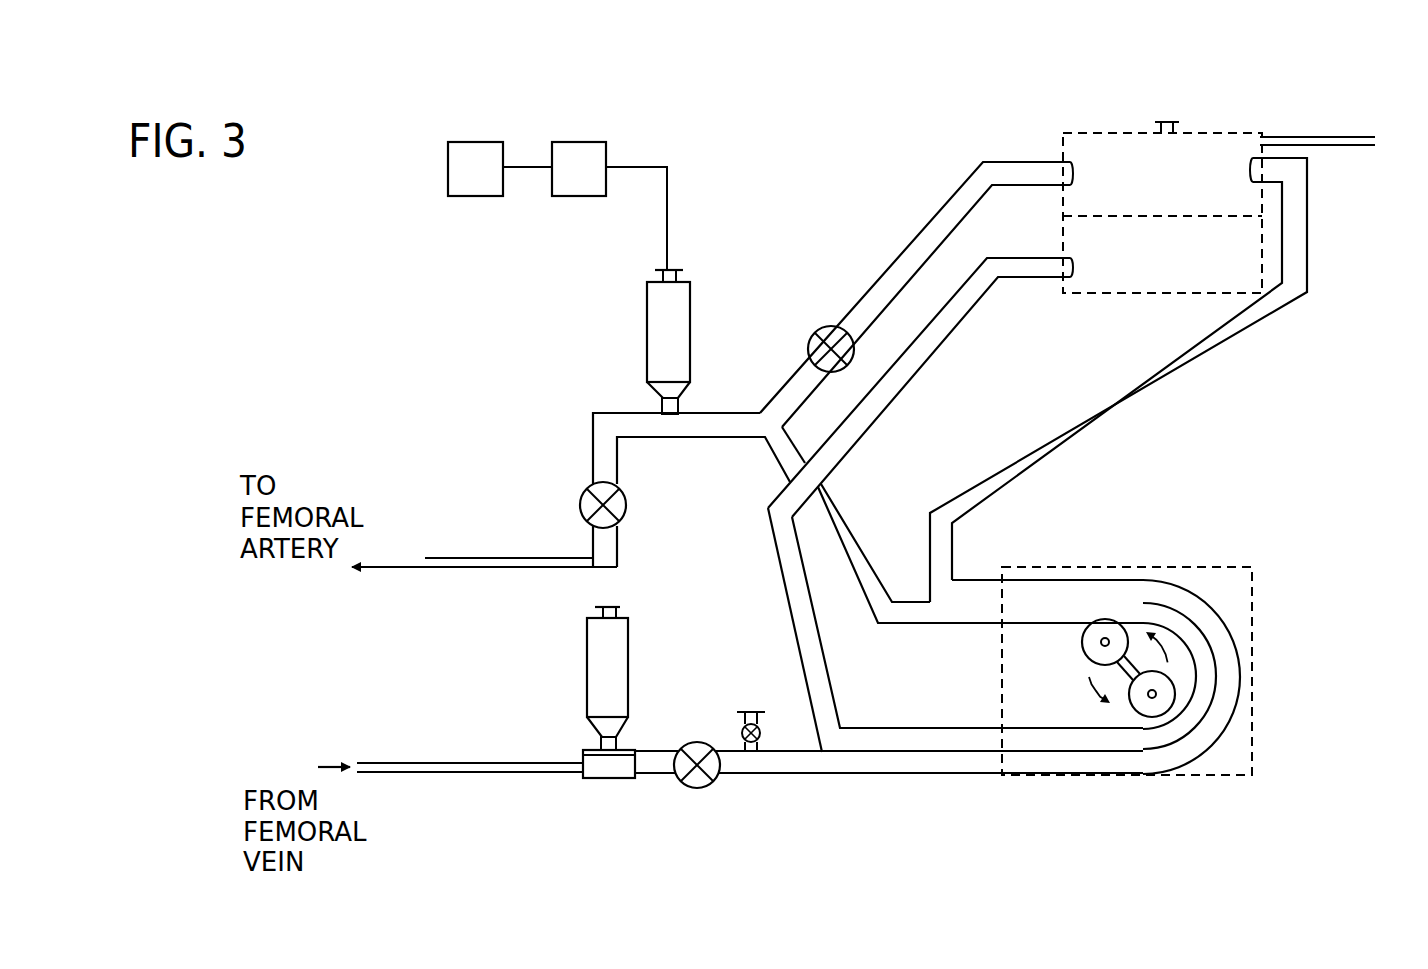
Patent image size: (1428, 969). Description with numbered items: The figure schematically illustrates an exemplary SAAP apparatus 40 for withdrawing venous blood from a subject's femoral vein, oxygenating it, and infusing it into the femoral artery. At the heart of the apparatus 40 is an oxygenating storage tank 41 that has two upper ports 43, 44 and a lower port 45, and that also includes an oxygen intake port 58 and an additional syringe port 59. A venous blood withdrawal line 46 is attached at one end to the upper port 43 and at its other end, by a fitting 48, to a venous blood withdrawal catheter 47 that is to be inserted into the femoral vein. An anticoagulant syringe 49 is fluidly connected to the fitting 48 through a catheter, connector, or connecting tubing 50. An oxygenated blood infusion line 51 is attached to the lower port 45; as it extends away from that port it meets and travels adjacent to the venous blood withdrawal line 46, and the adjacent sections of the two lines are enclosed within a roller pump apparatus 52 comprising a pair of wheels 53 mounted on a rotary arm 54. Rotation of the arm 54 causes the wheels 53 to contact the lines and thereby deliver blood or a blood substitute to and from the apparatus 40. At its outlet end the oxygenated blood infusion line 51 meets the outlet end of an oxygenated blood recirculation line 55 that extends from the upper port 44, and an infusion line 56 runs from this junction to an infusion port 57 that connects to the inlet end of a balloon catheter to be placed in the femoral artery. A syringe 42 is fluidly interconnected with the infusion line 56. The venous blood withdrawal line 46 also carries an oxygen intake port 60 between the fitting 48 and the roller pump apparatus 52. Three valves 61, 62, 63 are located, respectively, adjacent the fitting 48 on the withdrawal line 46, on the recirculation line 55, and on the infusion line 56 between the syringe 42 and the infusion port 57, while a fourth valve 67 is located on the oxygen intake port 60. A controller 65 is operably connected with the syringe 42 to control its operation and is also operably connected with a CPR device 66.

The SAAP apparatus 40 is at (1022, 465).
The oxygenating storage tank 41 is at (1282, 96).
The syringe 42 is at (655, 318).
The upper port 43 is at (1276, 191).
The upper port 44 is at (1056, 153).
The lower port 45 is at (1062, 281).
The venous blood withdrawal line 46 is at (1169, 380).
The venous blood withdrawal catheter 47 is at (490, 760).
The fitting 48 is at (615, 770).
The anticoagulant syringe 49 is at (615, 678).
The connecting tubing 50 is at (618, 742).
The oxygenated blood infusion line 51 is at (905, 370).
The roller pump apparatus 52 is at (1168, 663).
The wheels 53 is at (1145, 710).
The rotary arm 54 is at (1125, 655).
The oxygenated blood recirculation line 55 is at (905, 247).
The infusion line 56 is at (735, 437).
The infusion port 57 is at (593, 567).
The oxygen intake port 58 is at (1260, 137).
The additional syringe port 59 is at (1172, 120).
The oxygen intake port 60 is at (742, 708).
The valve 61 is at (703, 790).
The valve 62 is at (822, 333).
The valve 63 is at (583, 500).
The controller 65 is at (593, 184).
The CPR device 66 is at (490, 184).
The fourth valve 67 is at (763, 725).